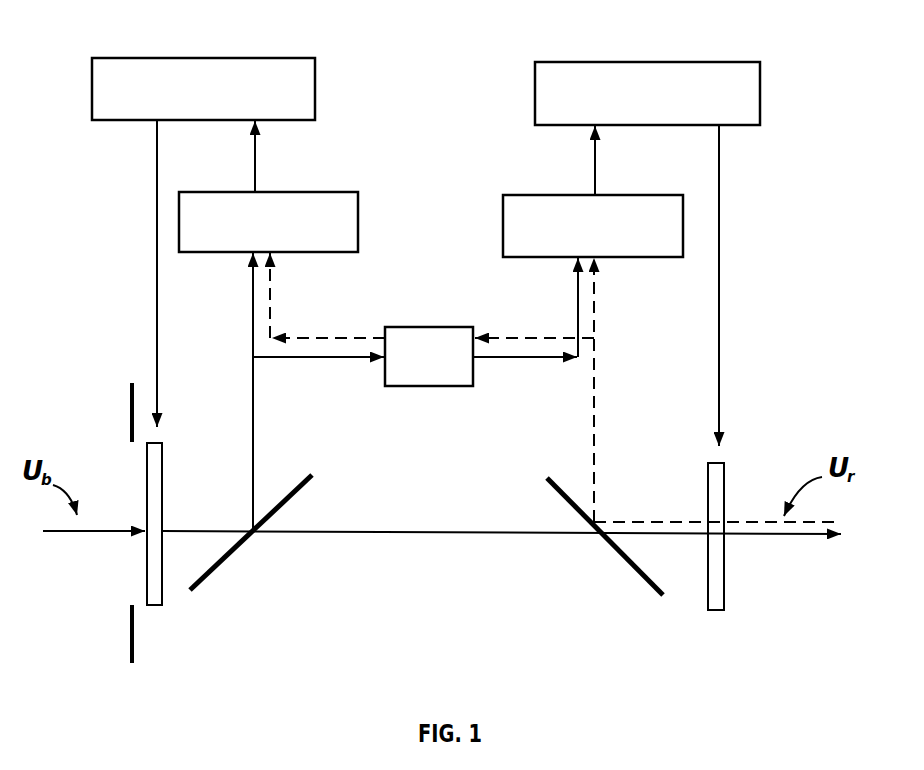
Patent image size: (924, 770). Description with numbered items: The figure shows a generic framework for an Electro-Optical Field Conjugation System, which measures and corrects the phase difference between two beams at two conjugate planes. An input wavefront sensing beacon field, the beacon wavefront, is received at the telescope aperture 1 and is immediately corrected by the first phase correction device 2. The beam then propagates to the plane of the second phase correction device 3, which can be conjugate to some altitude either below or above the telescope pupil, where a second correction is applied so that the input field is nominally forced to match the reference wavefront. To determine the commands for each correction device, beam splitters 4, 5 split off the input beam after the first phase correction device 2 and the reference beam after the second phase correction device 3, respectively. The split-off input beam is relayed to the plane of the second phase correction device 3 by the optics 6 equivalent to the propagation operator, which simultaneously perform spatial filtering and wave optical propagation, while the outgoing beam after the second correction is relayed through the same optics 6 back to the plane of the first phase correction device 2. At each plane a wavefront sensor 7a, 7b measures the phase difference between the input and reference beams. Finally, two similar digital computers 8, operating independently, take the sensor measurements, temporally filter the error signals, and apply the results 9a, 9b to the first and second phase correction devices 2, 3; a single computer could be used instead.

The telescope aperture 1 is at (120, 657).
The first phase correction device 2 is at (169, 609).
The second phase correction device 3 is at (732, 602).
The beam splitter 4 is at (216, 578).
The beam splitter 5 is at (636, 586).
The T z,alpha optics 6 is at (415, 322).
The wavefront sensor 7a is at (333, 186).
The wavefront sensor 7b is at (537, 191).
The digital computer 8 is at (261, 53).
The result applied to first phase correction device 9a is at (151, 216).
The result applied to second phase correction device 9b is at (729, 219).